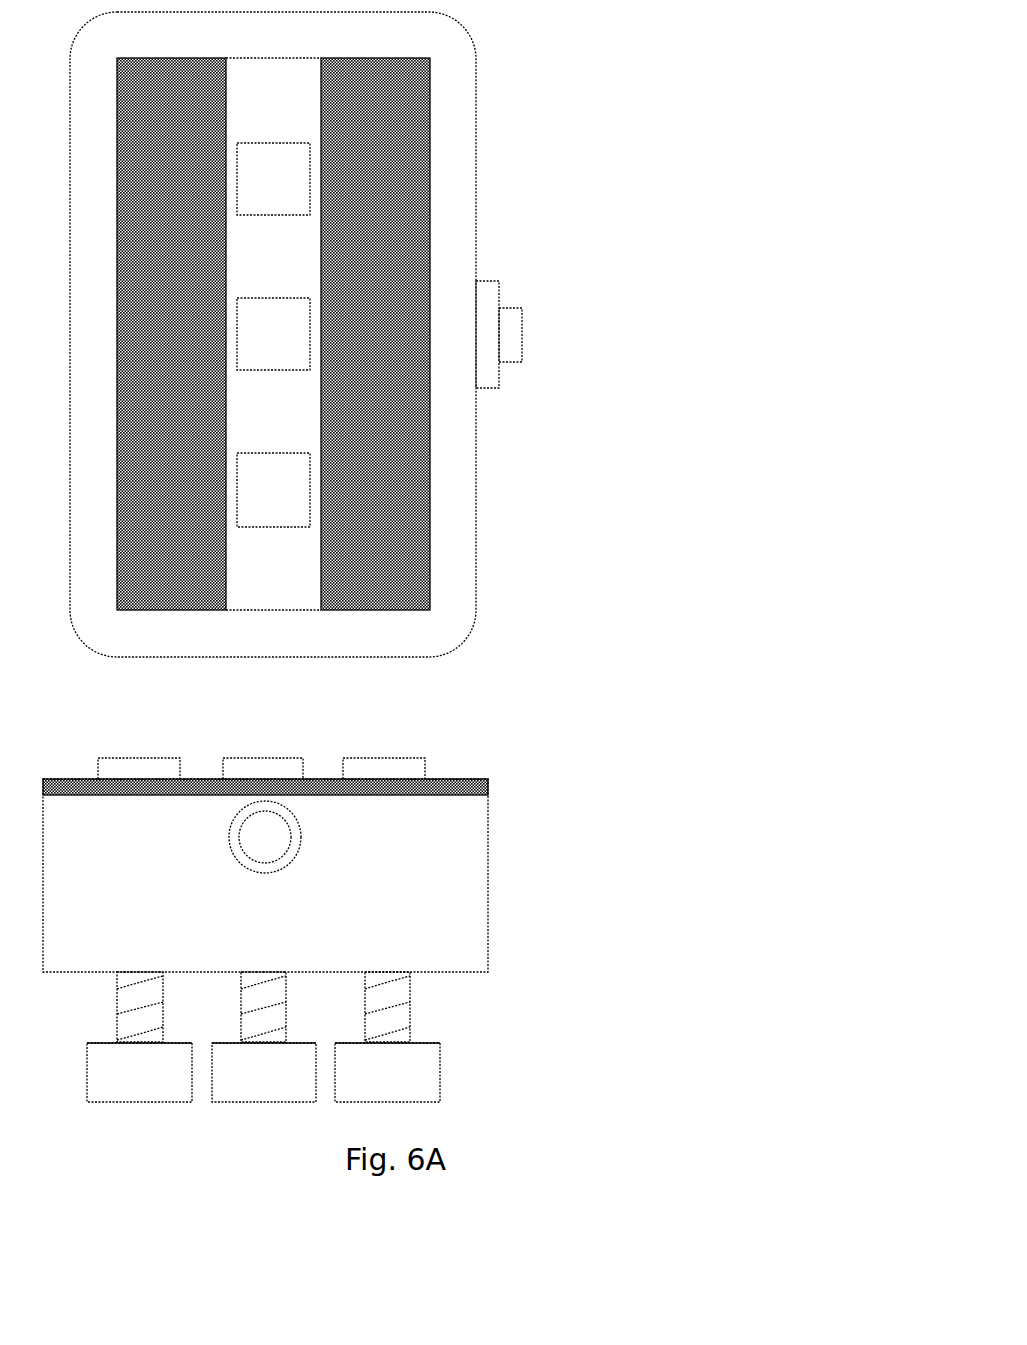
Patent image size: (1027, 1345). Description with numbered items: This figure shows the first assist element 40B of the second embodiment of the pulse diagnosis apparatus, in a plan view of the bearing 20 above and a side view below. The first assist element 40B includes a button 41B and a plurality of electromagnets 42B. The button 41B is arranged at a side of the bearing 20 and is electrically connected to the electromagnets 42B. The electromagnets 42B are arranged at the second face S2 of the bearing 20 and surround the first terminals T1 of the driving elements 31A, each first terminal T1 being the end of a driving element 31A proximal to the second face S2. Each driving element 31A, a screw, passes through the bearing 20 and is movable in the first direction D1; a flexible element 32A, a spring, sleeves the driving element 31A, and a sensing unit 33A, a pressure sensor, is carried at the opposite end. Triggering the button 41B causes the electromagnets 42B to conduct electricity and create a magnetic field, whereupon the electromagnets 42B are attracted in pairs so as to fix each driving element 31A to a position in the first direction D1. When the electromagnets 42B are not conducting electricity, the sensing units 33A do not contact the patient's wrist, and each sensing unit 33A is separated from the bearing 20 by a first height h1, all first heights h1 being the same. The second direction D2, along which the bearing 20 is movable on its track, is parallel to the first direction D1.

The second face S2 is at (457, 73).
The bearing 20 is at (476, 238).
The first assist element 40B is at (370, 465).
The electromagnets 42B is at (400, 165).
The button 41B is at (515, 337).
The first terminal T1 is at (293, 498).
The driving element 31A is at (402, 990).
The flexible element 32A is at (398, 1007).
The sensing unit 33A is at (426, 1077).
The first height h1 is at (95, 973).
The first direction D1 is at (590, 942).
The second direction D2 is at (590, 942).